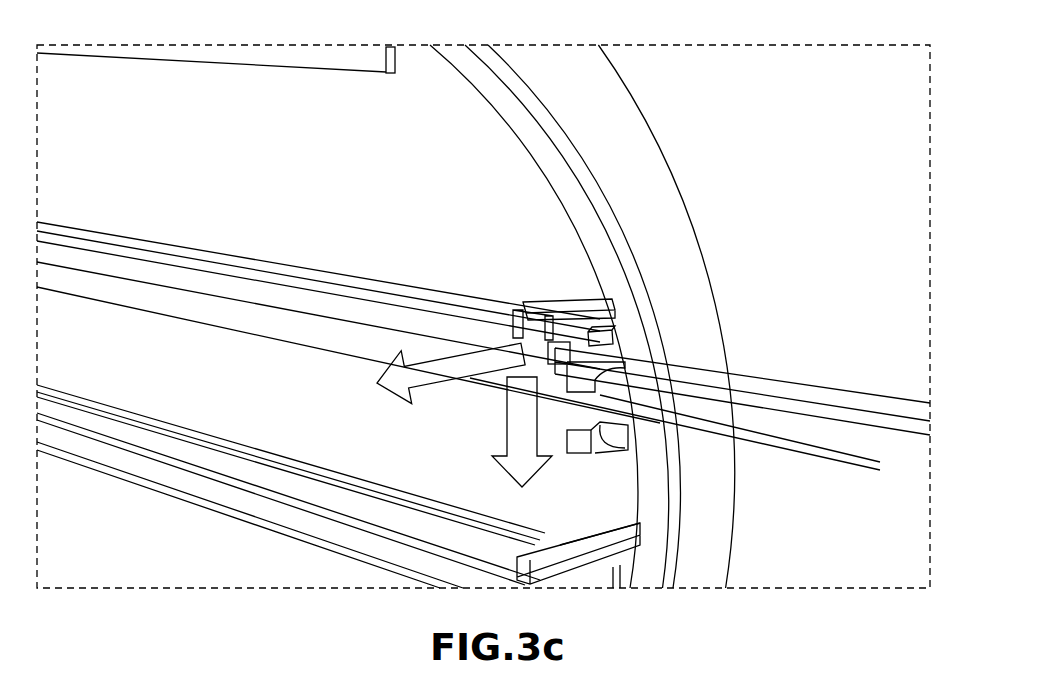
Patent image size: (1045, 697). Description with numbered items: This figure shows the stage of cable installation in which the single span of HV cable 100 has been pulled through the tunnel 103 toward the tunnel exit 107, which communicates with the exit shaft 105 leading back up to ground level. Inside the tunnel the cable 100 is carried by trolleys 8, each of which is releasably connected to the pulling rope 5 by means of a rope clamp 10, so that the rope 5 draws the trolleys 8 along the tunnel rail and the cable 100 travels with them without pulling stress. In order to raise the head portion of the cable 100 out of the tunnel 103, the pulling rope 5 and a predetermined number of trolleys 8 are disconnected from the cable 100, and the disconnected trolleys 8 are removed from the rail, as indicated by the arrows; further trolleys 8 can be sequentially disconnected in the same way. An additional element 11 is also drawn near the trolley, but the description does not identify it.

The pulling rope 5 is at (775, 385).
The trolley 8 is at (590, 335).
The rope clamp 10 is at (540, 336).
The lower bracket 11 is at (573, 456).
The HV cable 100 is at (814, 435).
The tunnel 103 is at (447, 168).
The exit shaft 105 is at (812, 150).
The tunnel exit 107 is at (523, 193).